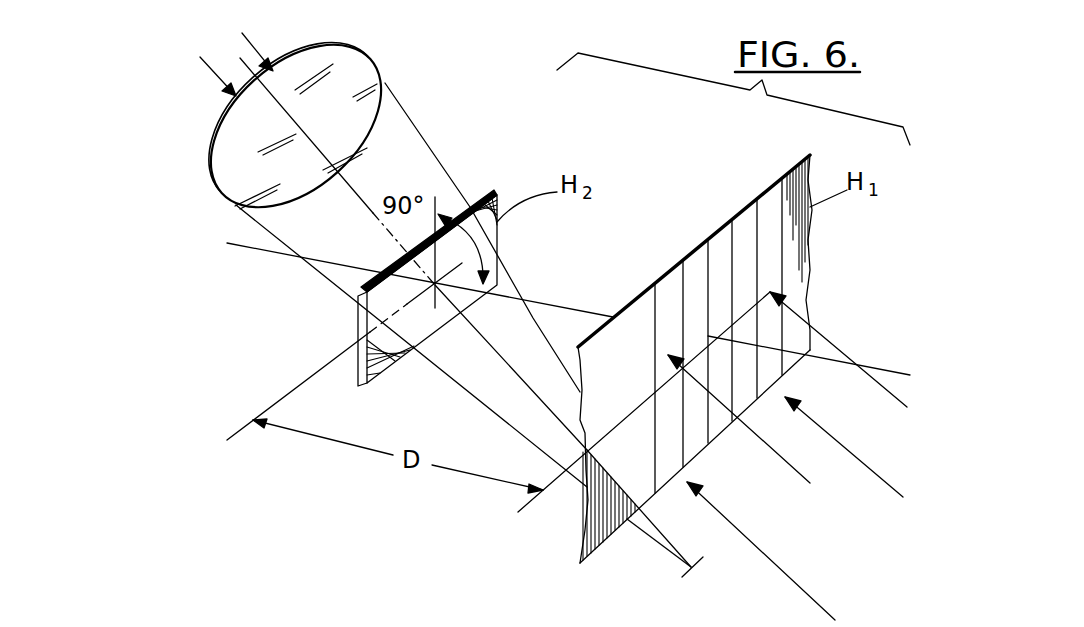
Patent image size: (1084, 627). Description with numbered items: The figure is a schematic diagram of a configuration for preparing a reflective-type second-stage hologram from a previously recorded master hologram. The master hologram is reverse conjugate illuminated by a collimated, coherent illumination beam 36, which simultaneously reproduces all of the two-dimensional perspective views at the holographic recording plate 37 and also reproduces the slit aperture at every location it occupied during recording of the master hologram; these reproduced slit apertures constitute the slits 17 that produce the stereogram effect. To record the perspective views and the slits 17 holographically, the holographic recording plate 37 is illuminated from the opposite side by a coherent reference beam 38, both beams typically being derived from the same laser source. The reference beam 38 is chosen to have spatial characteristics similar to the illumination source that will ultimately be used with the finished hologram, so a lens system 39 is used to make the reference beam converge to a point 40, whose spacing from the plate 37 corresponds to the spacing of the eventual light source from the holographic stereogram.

The slits 17 is at (695, 267).
The illumination beam 36 is at (847, 449).
The holographic recording plate 37 is at (357, 318).
The reference beam 38 is at (248, 42).
The lens system 39 is at (233, 183).
The point 40 is at (693, 567).